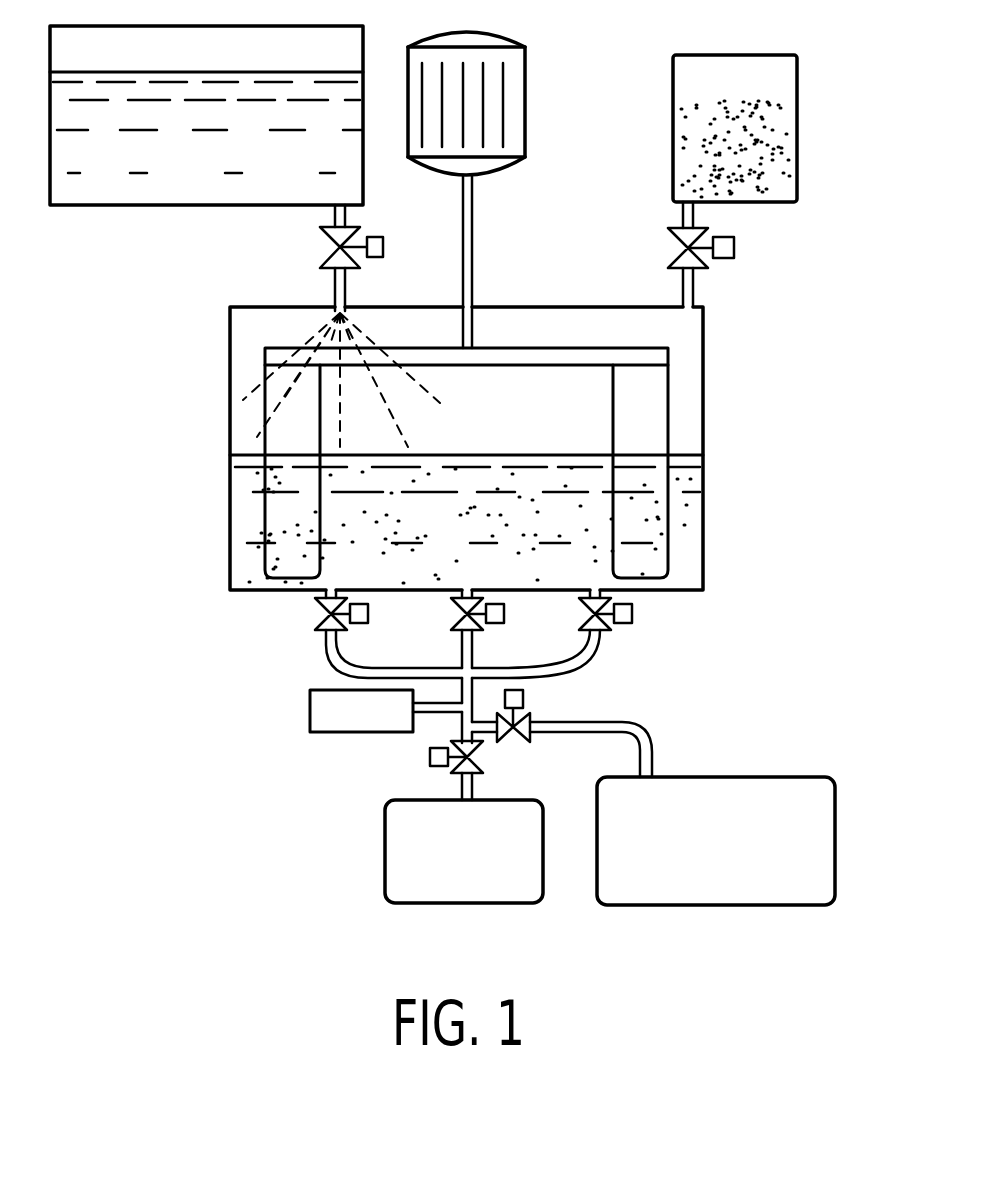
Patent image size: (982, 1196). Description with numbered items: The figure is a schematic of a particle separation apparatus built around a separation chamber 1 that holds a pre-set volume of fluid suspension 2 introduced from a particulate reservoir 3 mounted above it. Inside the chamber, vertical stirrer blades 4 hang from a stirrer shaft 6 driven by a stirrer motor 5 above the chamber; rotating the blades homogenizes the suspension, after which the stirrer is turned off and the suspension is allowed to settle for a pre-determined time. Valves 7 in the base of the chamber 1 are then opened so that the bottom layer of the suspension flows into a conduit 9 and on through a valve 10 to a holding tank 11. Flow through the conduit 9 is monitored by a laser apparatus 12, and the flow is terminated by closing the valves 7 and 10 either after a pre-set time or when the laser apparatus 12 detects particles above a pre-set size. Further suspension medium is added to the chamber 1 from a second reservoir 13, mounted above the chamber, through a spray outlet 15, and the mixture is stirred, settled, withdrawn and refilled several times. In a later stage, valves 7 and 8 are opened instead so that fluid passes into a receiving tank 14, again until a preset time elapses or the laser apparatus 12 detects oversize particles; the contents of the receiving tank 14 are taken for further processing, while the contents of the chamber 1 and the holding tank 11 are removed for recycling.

The separation chamber 1 is at (705, 392).
The fluid suspension 2 is at (250, 525).
The particulate reservoir 3 is at (767, 163).
The vertical stirrer blades 4 is at (650, 432).
The stirrer motor 5 is at (516, 40).
The stirrer shaft 6 is at (473, 260).
The valves 7 is at (320, 608).
The valve 8 is at (427, 753).
The conduit 9 is at (337, 662).
The valve 10 is at (530, 718).
The holding tank 11 is at (803, 777).
The laser apparatus 12 is at (323, 715).
The reservoir 13 is at (145, 190).
The receiving tank 14 is at (385, 848).
The spray outlet 15 is at (310, 333).